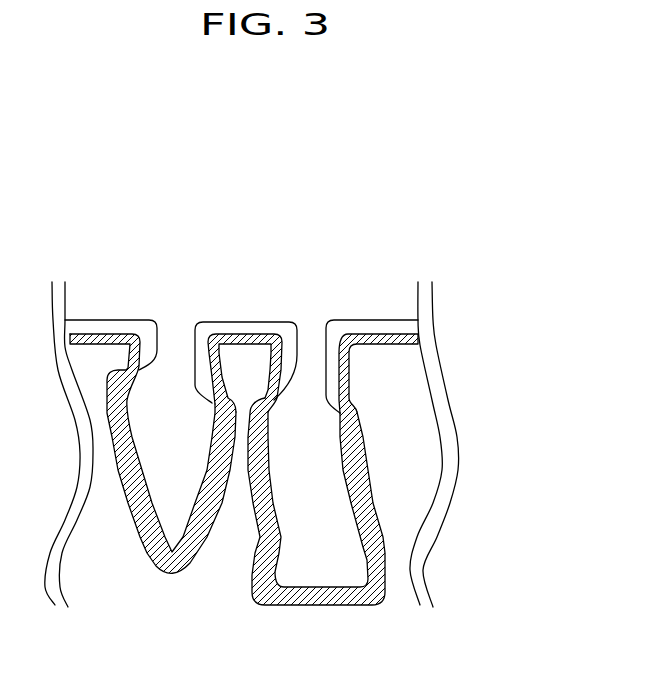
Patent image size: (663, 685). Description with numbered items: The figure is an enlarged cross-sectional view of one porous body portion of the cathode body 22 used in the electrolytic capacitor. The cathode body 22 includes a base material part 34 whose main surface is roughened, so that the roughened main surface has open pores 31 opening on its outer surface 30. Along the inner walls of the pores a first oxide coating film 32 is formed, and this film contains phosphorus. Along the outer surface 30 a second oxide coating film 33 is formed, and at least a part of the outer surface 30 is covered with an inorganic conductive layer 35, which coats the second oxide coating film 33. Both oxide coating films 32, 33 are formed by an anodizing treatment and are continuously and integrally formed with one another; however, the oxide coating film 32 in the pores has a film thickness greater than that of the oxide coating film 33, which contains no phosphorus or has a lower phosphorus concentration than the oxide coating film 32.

The cathode body 22 is at (455, 268).
The outer surface 30 is at (244, 438).
The open pores 31 is at (298, 462).
The oxide coating film (first coating layer) 32 is at (219, 455).
The oxide coating film (second coating layer) 33 is at (243, 332).
The base material part 34 is at (395, 363).
The inorganic conductive layer 35 is at (278, 327).